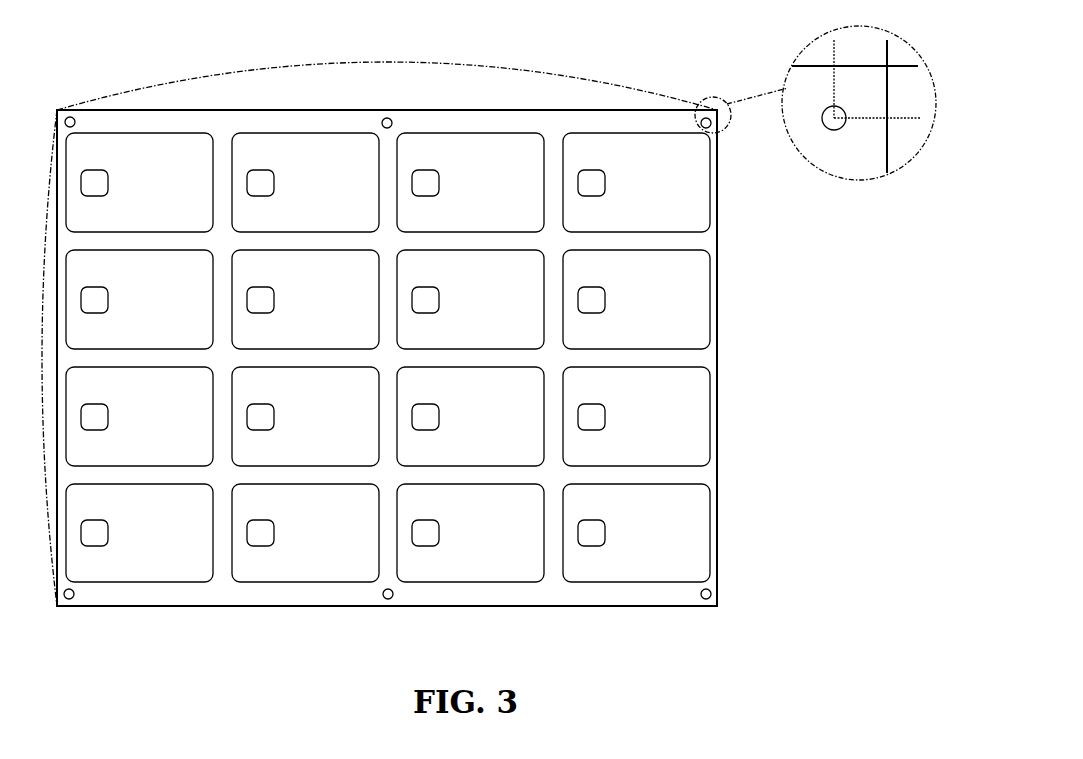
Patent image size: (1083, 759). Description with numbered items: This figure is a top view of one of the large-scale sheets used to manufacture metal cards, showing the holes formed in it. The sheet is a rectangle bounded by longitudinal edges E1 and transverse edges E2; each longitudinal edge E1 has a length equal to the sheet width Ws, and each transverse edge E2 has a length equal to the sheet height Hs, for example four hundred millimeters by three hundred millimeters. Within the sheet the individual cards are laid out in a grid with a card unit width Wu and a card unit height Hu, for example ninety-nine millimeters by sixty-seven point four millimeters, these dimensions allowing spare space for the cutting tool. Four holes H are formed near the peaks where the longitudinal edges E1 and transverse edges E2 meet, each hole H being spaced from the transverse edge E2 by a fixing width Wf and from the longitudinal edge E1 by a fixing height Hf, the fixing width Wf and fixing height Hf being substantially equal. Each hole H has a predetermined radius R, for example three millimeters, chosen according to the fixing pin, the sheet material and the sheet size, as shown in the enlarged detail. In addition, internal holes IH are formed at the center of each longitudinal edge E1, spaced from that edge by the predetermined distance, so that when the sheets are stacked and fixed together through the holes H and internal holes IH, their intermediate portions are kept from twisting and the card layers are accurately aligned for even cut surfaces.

The hole H is at (71, 117).
The internal hole IH is at (387, 118).
The card unit width Wu is at (637, 133).
The card unit height Hu is at (710, 184).
The sheet height Hs is at (763, 606).
The sheet width Ws is at (57, 606).
The longitudinal edge E1 is at (387, 74).
The transverse edge E2 is at (36, 358).
The radius R is at (865, 90).
The fixing width Wf is at (834, 49).
The fixing height Hf is at (908, 66).